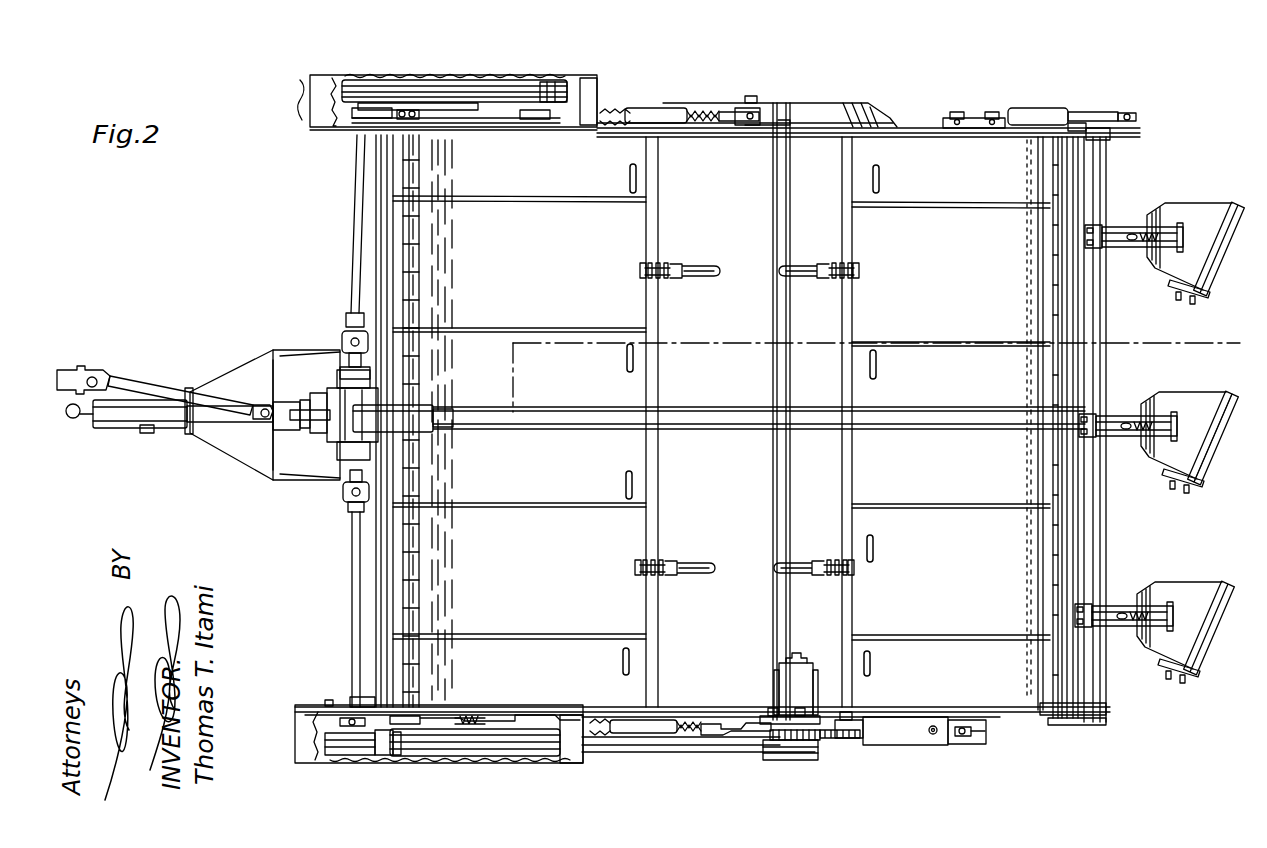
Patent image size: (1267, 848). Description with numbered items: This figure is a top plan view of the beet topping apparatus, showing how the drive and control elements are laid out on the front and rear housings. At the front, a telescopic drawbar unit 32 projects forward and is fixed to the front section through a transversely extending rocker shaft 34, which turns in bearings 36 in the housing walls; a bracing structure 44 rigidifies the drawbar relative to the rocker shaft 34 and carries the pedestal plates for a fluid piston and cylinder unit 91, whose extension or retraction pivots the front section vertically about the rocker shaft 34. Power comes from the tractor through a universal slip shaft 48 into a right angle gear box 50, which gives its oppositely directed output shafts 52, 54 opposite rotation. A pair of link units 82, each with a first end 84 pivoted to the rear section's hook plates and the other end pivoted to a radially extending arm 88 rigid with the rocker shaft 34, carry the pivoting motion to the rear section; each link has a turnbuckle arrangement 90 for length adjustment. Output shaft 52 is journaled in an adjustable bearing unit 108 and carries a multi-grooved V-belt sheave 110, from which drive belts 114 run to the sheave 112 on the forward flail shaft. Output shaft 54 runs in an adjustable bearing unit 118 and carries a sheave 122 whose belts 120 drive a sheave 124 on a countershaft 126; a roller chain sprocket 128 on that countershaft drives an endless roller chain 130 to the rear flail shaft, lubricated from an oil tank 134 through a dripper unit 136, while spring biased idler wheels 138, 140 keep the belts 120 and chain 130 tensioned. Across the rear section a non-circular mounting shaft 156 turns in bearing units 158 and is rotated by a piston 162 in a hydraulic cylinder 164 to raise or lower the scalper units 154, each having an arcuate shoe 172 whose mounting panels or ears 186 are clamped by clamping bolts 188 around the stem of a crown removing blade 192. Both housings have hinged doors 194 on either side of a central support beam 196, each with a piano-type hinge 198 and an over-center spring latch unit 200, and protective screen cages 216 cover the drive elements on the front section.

The telescopic drawbar unit 32 is at (146, 433).
The rocker shaft 34 is at (352, 608).
The bearings 36 is at (348, 701).
The bracing structure 44 is at (264, 368).
The universal slip shaft 48 is at (150, 396).
The right angle gear box 50 is at (337, 432).
The output shaft 52 is at (355, 242).
The output shaft 54 is at (345, 554).
The link units 82 is at (729, 100).
The first end 84 is at (770, 118).
The radially extending arm 88 is at (376, 750).
The turnbuckle arrangement 90 is at (653, 108).
The fluid piston and cylinder unit 91 is at (438, 403).
The bearing unit 108 is at (347, 126).
The multi-grooved V-belt sheave 110 is at (358, 80).
The multi-groove V-belt sheave 112 is at (547, 83).
The drive belts 114 is at (432, 84).
The bearing unit 118 is at (340, 729).
The belts 120 is at (470, 750).
The multiple-groove V-belt sheave 122 is at (350, 752).
The multiple groove sheave 124 is at (786, 762).
The countershaft 126 is at (778, 714).
The roller chain sprocket 128 is at (803, 713).
The endless roller chain 130 is at (822, 744).
The oil tank 134 is at (908, 736).
The dripper unit 136 is at (970, 743).
The idler wheel 138 is at (398, 728).
The idler wheel 140 is at (848, 730).
The scalper units 154 is at (1208, 198).
The mounting shaft 156 is at (1102, 189).
The bearing units 158 is at (1110, 137).
The piston 162 is at (1088, 117).
The hydraulic cylinder 164 is at (1030, 112).
The arcuate shoe 172 is at (1188, 402).
The mounting panels or ears 186 is at (1172, 674).
The clamping bolts 188 is at (1184, 684).
The crown removing blade 192 is at (1210, 449).
The hinged lids or doors 194 is at (652, 545).
The central support beam 196 is at (660, 220).
The piano-type hinge 198 is at (416, 259).
The over-center spring latch unit 200 is at (698, 262).
The protective screen cages 216 is at (325, 80).